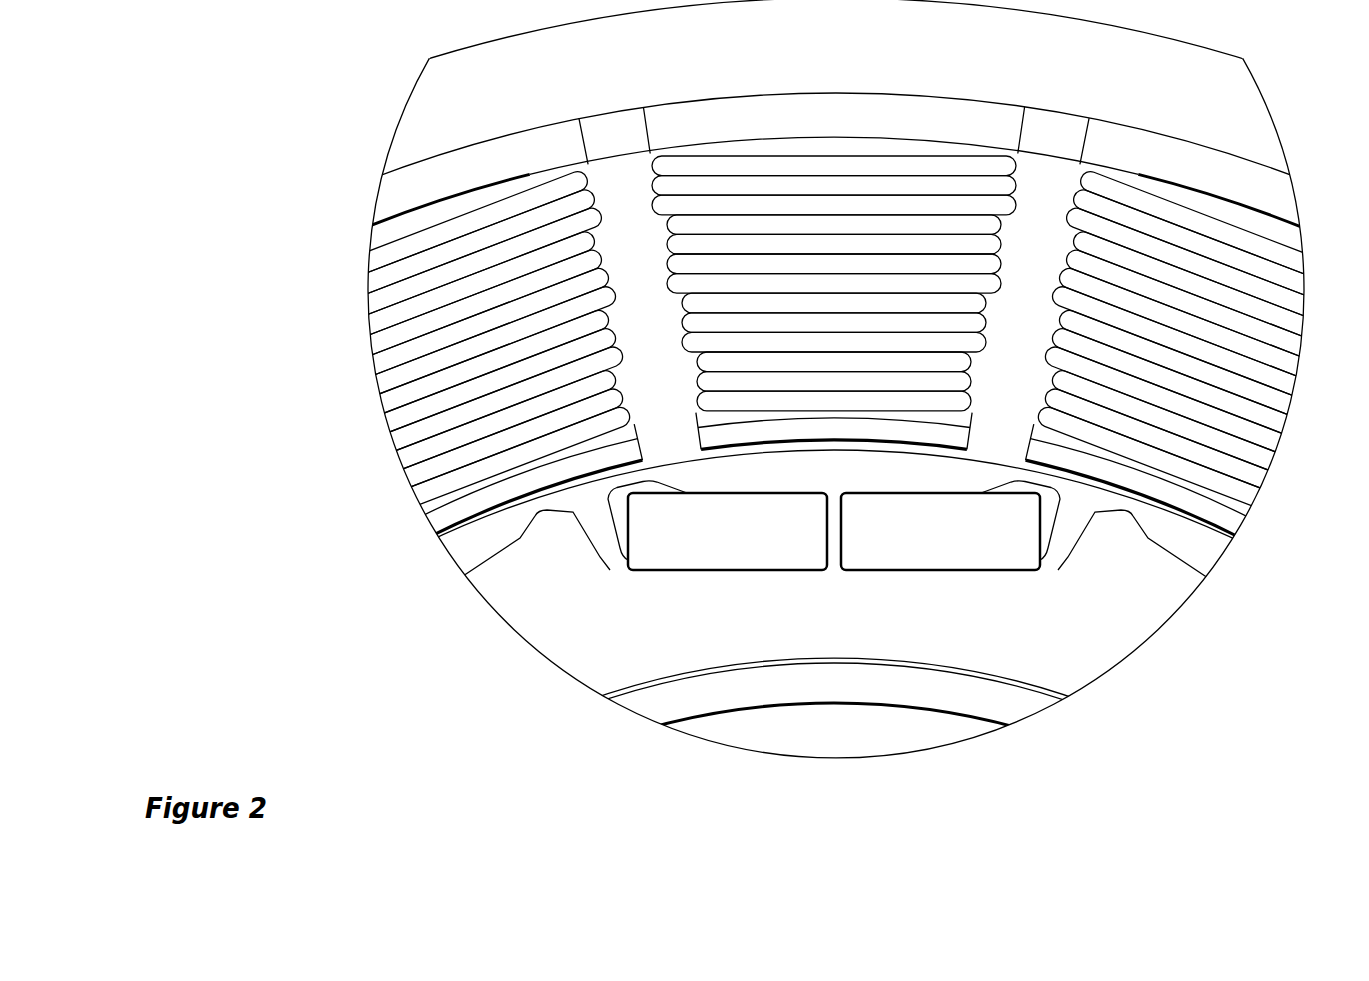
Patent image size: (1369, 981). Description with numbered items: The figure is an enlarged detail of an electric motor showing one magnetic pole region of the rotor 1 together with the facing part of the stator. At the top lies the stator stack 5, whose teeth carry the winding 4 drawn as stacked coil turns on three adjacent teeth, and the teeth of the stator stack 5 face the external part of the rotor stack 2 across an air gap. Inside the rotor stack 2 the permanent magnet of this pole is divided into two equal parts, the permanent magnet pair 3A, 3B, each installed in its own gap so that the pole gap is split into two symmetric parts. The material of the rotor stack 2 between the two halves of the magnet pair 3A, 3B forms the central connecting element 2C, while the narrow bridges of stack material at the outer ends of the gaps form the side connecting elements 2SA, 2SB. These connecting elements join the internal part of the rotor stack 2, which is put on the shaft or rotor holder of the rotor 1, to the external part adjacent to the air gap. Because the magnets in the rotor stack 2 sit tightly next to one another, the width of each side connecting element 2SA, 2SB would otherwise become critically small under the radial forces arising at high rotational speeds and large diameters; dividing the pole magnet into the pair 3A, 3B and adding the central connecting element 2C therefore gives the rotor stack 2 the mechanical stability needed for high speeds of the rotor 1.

The rotor 1 is at (857, 615).
The rotor stack 2 is at (851, 683).
The central connecting element 2C is at (833, 532).
The side connecting element 2SA is at (608, 528).
The side connecting element 2SB is at (1059, 528).
The half of the polarized permanent magnet 3A is at (672, 535).
The half of the polarized permanent magnet 3B is at (925, 528).
The winding 4 is at (378, 315).
The stator stack 5 is at (535, 91).